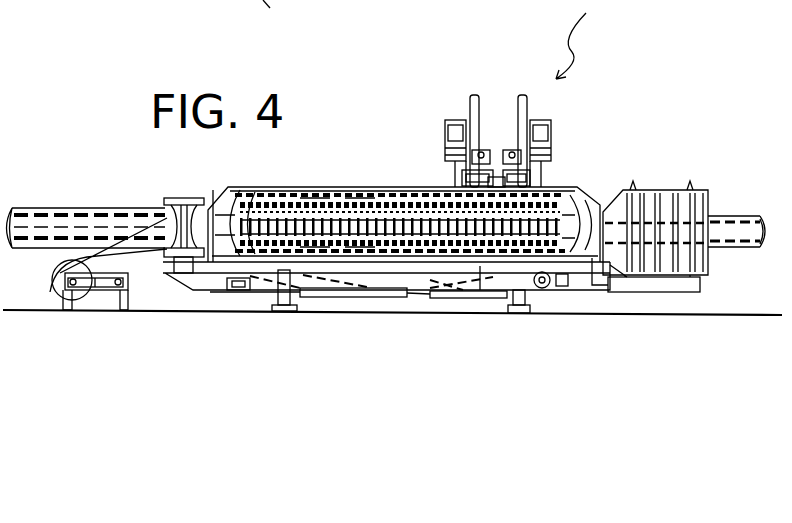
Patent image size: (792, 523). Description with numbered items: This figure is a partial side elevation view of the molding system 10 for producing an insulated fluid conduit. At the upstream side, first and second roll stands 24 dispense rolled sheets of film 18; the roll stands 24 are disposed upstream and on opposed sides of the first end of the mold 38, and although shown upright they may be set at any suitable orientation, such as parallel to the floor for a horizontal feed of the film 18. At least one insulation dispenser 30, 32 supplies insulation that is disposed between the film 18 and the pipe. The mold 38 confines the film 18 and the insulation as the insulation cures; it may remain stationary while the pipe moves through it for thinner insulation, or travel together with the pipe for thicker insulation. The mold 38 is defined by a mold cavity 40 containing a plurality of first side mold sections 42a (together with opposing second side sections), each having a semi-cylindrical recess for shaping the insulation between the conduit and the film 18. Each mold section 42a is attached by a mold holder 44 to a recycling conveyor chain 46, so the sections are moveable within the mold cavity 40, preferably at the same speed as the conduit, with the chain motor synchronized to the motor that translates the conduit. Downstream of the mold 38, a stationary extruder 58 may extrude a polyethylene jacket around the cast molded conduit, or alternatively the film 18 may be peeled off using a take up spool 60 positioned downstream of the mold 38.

The molding system 10 is at (584, 42).
The film 18 is at (710, 193).
The roll stand 24 is at (693, 195).
The insulation dispenser 30 is at (555, 125).
The insulation dispenser 32 is at (447, 125).
The mold 38 is at (572, 192).
The mold cavity 40 is at (587, 192).
The first side mold section 42a is at (222, 205).
The mold holder 44 is at (313, 193).
The recycling conveyor chain 46 is at (357, 193).
The stationary extruder 58 is at (277, 9).
The take up spool 60 is at (50, 292).